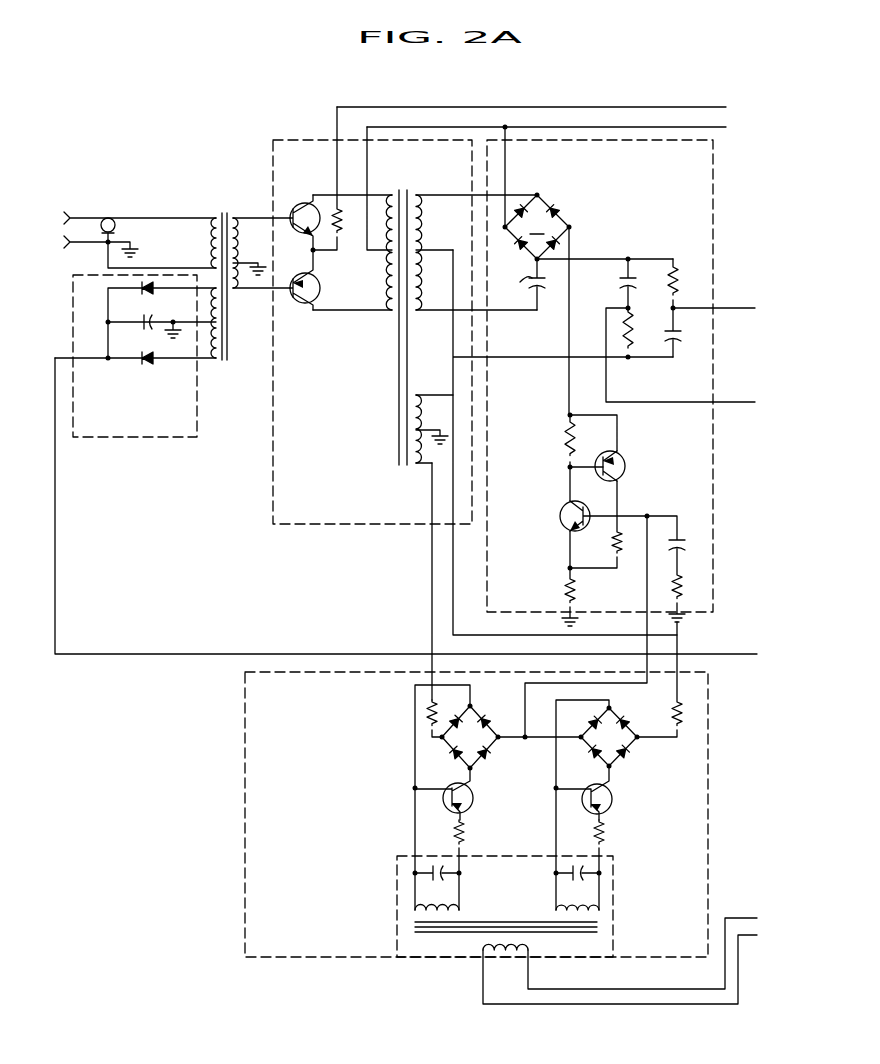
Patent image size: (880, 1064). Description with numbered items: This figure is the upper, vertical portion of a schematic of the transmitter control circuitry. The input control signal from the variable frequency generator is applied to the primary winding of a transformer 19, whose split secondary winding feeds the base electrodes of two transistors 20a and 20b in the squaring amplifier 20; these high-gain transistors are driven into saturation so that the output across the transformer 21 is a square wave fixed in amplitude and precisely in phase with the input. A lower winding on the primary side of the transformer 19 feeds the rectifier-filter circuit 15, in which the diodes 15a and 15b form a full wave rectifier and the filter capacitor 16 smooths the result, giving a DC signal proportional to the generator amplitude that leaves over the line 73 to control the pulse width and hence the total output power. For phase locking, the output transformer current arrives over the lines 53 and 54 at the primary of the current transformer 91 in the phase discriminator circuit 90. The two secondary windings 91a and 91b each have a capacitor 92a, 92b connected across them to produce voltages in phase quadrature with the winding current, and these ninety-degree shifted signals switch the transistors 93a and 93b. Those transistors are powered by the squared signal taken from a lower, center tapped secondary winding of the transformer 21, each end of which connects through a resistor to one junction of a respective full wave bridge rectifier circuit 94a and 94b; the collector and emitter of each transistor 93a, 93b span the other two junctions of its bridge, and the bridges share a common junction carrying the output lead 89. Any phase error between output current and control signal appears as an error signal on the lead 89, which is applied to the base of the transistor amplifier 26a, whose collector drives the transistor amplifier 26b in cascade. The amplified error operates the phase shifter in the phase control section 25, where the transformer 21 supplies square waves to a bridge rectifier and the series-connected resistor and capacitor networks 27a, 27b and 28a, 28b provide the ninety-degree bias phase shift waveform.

The rectifier-filter circuit 15 is at (155, 338).
The diode 15a is at (146, 283).
The diode 15b is at (141, 355).
The filter capacitor 16 is at (141, 318).
The transformer 19 is at (223, 214).
The squaring amplifier 20 is at (405, 342).
The transistor 20a is at (303, 203).
The transistor 20b is at (303, 304).
The transformer 21 is at (407, 190).
The phase control section 25 is at (629, 376).
The transistor amplifier 26a is at (563, 505).
The transistor amplifier 26b is at (626, 461).
The capacitor 27a is at (622, 279).
The resistor 27b is at (624, 337).
The capacitor 28a is at (684, 326).
The resistor 28b is at (682, 283).
The line 73 is at (229, 648).
The output lead 89 is at (522, 697).
The phase discriminator circuit 90 is at (516, 814).
The current transformer 91 is at (533, 937).
The secondary winding 91a is at (415, 902).
The secondary winding 91b is at (599, 905).
The capacitor 92a is at (432, 866).
The capacitor 92b is at (578, 866).
The switching transistor 93a is at (474, 800).
The switching transistor 93b is at (613, 800).
The full wave bridge rectifier circuit 94a is at (483, 747).
The full wave bridge rectifier circuit 94b is at (622, 747).
The line 53 is at (627, 989).
The line 54 is at (576, 1004).